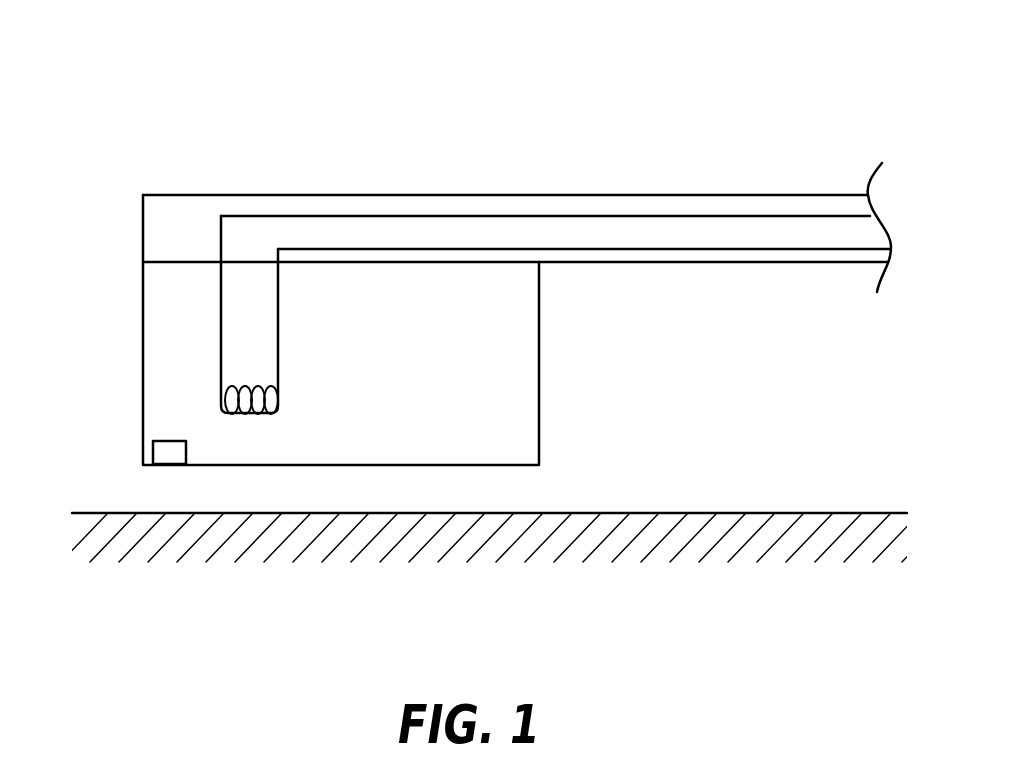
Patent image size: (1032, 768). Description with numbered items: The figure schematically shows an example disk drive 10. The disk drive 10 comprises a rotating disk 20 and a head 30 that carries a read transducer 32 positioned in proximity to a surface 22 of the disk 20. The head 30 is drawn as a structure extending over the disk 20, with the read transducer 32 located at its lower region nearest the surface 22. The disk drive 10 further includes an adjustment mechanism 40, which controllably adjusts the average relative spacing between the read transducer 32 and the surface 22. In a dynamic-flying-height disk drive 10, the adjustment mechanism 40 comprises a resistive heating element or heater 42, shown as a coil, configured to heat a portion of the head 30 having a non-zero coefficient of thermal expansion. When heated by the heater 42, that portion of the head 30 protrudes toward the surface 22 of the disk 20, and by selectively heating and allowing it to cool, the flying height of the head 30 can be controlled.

The disk drive 10 is at (515, 128).
The rotating disk 20 is at (108, 533).
The surface 22 is at (208, 512).
The head 30 is at (162, 293).
The read transducer 32 is at (150, 453).
The adjustment mechanism 40 is at (308, 317).
The heater 42 is at (280, 402).